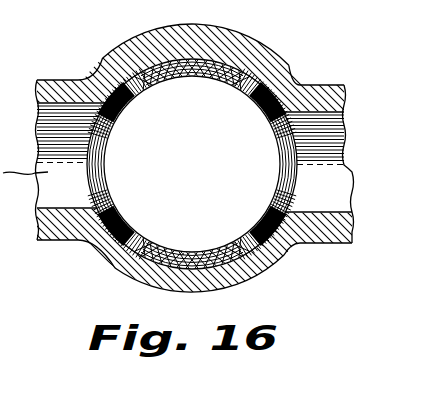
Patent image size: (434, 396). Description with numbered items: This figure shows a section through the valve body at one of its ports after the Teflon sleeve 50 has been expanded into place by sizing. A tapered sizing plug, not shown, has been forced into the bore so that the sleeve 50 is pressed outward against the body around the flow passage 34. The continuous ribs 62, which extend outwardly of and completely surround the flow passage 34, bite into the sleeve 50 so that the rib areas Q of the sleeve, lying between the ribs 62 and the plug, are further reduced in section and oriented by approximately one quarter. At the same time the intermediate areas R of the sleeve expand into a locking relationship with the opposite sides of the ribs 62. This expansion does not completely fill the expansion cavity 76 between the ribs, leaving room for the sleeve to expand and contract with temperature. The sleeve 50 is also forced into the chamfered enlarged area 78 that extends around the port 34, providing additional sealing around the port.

The flow passage 34 is at (343, 164).
The sleeve 50 is at (190, 73).
The continuous ribs 62 is at (108, 76).
The cavity 76 is at (256, 78).
The enlarged chamfered area 78 is at (283, 214).
The rib areas Q is at (124, 225).
The intermediate areas R is at (183, 253).